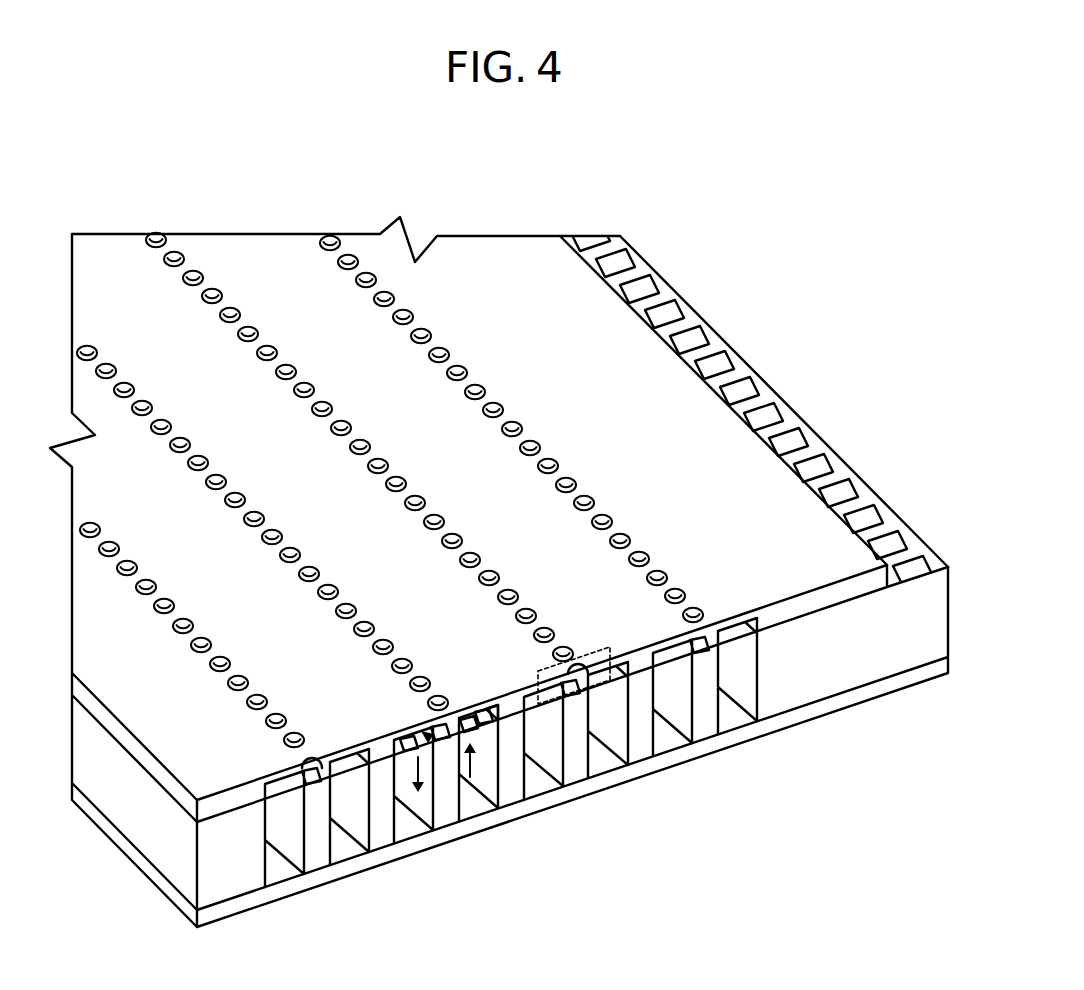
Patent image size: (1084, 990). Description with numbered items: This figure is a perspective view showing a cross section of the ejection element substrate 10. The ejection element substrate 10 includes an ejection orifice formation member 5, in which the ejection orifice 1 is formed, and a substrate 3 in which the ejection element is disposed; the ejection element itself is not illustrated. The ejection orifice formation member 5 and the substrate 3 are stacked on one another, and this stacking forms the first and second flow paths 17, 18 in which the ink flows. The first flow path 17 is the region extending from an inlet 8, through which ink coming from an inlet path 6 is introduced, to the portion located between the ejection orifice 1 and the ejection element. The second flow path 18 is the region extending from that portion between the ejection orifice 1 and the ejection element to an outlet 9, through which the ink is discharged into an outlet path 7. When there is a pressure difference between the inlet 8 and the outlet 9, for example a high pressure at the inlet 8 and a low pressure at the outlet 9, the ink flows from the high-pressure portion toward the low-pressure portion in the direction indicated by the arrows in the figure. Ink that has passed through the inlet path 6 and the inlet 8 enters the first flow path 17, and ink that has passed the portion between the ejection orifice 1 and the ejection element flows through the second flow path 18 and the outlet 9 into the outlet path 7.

The ejection orifice 1 is at (441, 690).
The substrate 3 is at (162, 833).
The ejection orifice formation member 5 is at (837, 591).
The inlet path 6 is at (480, 777).
The outlet path 7 is at (423, 803).
The inlet 8 is at (475, 714).
The outlet 9 is at (414, 733).
The ejection element substrate 10 is at (694, 272).
The first flow path 17 is at (497, 730).
The second flow path 18 is at (393, 760).